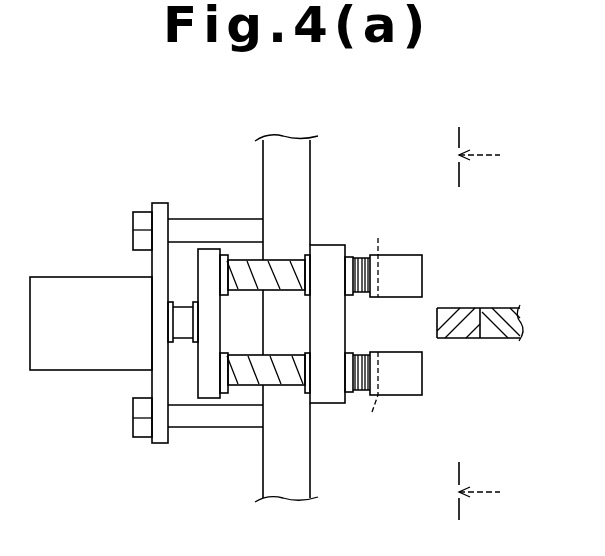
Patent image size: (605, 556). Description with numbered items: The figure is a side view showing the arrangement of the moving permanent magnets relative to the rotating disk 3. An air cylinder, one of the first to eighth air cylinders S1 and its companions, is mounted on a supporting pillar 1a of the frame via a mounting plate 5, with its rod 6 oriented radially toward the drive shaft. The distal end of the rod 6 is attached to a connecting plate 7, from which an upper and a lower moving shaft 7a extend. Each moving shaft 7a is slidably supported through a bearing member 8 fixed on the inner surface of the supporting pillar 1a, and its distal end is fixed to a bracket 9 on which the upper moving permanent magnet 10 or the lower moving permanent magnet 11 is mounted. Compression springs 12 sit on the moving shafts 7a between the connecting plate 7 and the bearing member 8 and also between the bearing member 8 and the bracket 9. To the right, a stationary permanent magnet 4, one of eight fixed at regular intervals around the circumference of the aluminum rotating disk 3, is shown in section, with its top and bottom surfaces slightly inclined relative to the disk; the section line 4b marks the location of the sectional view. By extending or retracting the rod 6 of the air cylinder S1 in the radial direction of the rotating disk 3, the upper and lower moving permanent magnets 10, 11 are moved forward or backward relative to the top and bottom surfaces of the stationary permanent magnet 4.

The supporting pillar 1a is at (310, 481).
The rotating disk 3 is at (510, 338).
The stationary permanent magnet 4 is at (462, 338).
The section line 4b is at (500, 323).
The mounting plate 5 is at (152, 298).
The first air cylinder S1 is at (48, 371).
The rod 6 is at (182, 342).
The connecting plate 7 is at (211, 398).
The moving shaft 7a is at (257, 263).
The bearing member 8 is at (332, 250).
The bracket 9 is at (402, 260).
The upper moving permanent magnet 10 is at (372, 246).
The lower moving permanent magnet 11 is at (366, 403).
The compression spring 12 is at (283, 290).